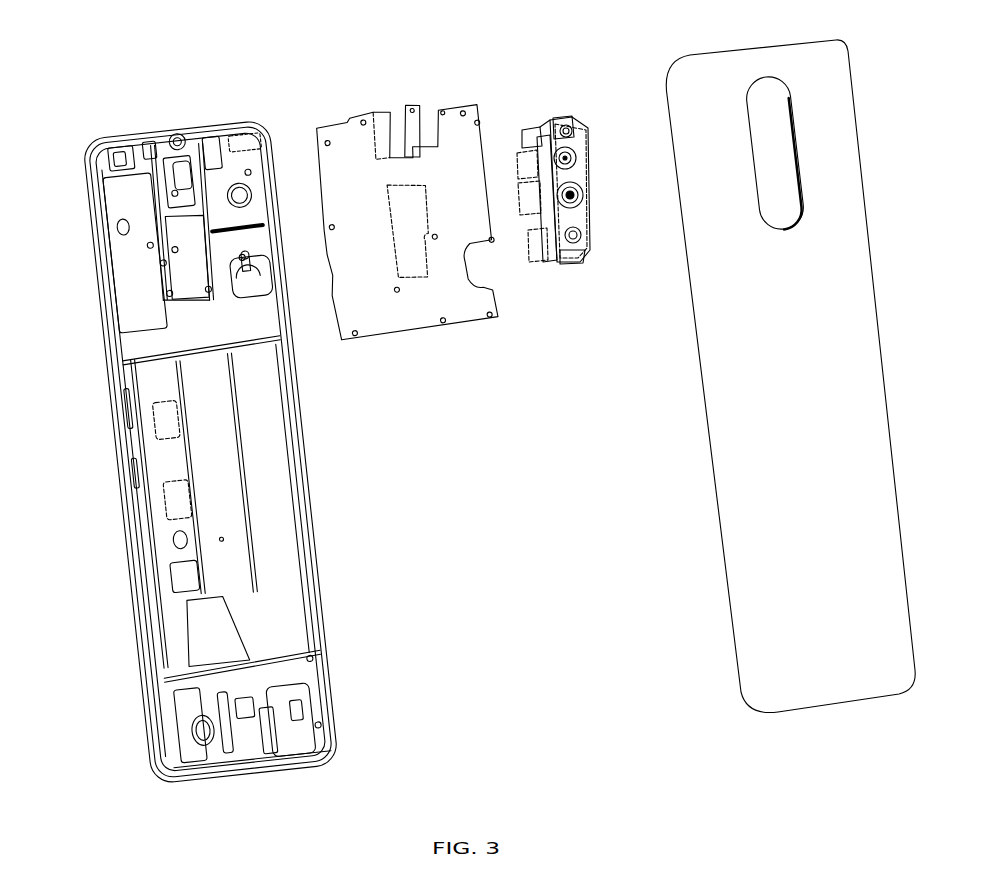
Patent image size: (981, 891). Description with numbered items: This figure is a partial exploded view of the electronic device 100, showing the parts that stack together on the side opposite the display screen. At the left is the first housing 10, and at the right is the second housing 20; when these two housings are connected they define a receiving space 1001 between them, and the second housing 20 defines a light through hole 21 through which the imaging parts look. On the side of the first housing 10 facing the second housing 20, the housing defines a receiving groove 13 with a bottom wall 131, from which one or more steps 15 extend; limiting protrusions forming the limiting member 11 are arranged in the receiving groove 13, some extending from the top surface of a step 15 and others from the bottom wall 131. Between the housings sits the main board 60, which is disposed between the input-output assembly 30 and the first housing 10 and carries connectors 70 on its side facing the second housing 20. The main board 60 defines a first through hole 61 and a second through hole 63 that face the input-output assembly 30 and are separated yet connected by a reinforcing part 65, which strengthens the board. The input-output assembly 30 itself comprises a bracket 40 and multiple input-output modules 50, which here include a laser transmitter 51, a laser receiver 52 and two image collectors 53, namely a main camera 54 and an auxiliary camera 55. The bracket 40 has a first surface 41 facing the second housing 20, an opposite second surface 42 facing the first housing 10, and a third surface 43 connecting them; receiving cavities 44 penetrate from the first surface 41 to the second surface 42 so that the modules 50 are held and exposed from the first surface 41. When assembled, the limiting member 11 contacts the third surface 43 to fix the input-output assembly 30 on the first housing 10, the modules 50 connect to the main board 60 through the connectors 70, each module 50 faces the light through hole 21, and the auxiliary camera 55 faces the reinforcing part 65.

The electronic device 100 is at (50, 61).
The first housing 10 is at (107, 393).
The receiving space 1001 is at (222, 512).
The limiting member 11 is at (170, 293).
The receiving groove 13 is at (193, 243).
The bottom wall 131 is at (178, 240).
The step 15 is at (247, 257).
The second housing 20 is at (711, 400).
The light through hole 21 is at (775, 165).
The input-output assembly 30 is at (571, 214).
The bracket 40 is at (560, 188).
The first surface 41 is at (583, 213).
The second surface 42 is at (537, 122).
The third surface 43 is at (553, 120).
The receiving cavity 44 is at (578, 260).
The input-output module 50 is at (600, 206).
The laser transmitter 51 is at (573, 132).
The laser receiver 52 is at (613, 253).
The image collector 53 is at (600, 177).
The main camera 54 is at (583, 193).
The auxiliary camera 55 is at (572, 157).
The main board 60 is at (467, 317).
The first through hole 61 is at (410, 263).
The second through hole 63 is at (393, 121).
The reinforcing part 65 is at (398, 170).
The connector 70 is at (545, 260).